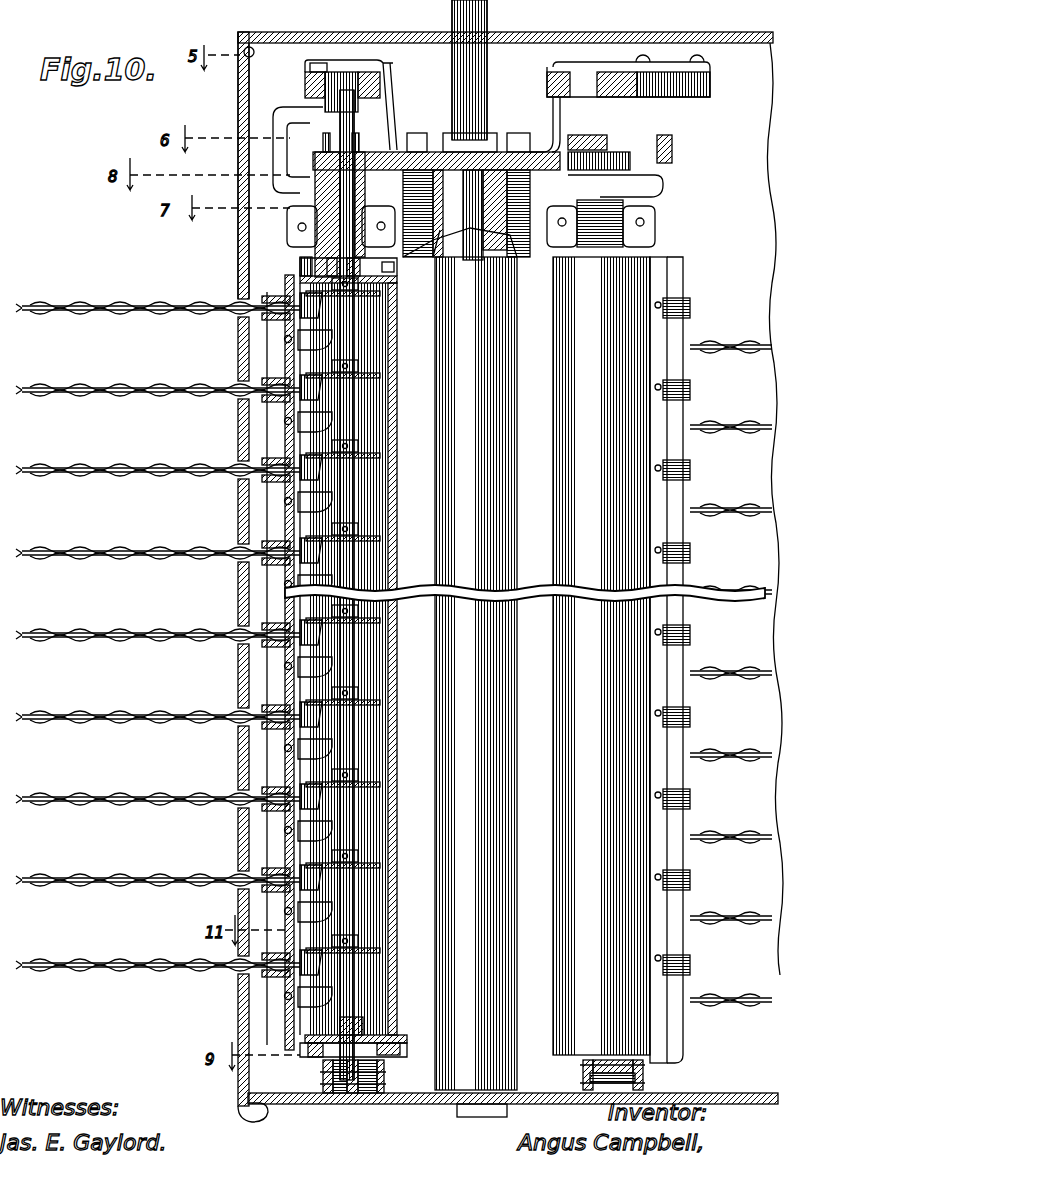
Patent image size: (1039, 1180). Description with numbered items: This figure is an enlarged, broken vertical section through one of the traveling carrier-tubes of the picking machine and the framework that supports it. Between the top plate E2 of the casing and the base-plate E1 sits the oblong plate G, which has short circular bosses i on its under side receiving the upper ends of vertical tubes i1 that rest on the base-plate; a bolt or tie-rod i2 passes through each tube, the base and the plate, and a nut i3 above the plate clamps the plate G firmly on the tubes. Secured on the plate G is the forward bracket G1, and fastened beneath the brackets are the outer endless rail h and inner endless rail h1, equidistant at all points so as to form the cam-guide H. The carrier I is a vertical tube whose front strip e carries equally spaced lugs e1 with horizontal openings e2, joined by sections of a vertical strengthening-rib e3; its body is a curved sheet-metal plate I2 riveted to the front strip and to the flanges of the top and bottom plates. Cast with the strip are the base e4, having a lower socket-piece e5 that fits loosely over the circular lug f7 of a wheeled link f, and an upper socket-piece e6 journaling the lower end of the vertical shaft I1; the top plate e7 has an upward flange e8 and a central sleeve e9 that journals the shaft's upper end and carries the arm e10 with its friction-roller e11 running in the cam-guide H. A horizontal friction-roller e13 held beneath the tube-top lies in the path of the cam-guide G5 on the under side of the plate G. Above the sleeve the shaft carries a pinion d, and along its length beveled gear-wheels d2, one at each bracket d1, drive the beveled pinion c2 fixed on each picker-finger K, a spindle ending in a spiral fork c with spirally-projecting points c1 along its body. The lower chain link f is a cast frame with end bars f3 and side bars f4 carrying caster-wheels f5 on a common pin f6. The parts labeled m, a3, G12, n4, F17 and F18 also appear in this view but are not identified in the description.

The top plate E2 is at (530, 38).
The base-plate E1 is at (440, 1100).
The left frame plate m is at (240, 385).
The picker-finger K is at (128, 306).
The spiral fork c is at (18, 394).
The spirally-projecting points c1 is at (92, 396).
The front strip e is at (286, 438).
The lugs e1 is at (272, 305).
The horizontal openings e2 is at (270, 333).
The vertical strengthening-rib e3 is at (280, 672).
The beveled gear-wheels d2 is at (387, 433).
The bracket d1 is at (276, 508).
The beveled pinion c2 is at (290, 630).
The vertical shaft I1 is at (352, 498).
The vertical drive shaft a3 is at (355, 143).
The curved sheet-metal plate I2 is at (420, 775).
The vertical tubes i1 is at (480, 362).
The carrier I is at (396, 668).
The cam-guide H is at (330, 90).
The friction-rollers e11 is at (318, 66).
The outer endless rail h is at (307, 80).
The inner endless rail h1 is at (548, 78).
The forward bracket G1 is at (388, 88).
The oblong plate G is at (400, 156).
The bracket plate G12 is at (590, 140).
The pinion d is at (318, 165).
The arm e10 is at (283, 125).
The sleeve e9 is at (290, 202).
The lug with pin hole F17 is at (383, 215).
The circular bosses i is at (493, 175).
The nut i3 is at (452, 142).
The bolt or tie-rod i2 is at (475, 212).
The cam-guide G5 is at (520, 262).
The horizontal friction-roller e13 is at (592, 258).
The top plate e7 is at (300, 260).
The circumferential upward-extending flange e8 is at (244, 276).
The frame lug n4 is at (240, 250).
The base e4 is at (395, 1040).
The central socket-piece e6 is at (365, 1020).
The central socket-piece e5 is at (300, 1040).
The circular lug f7 is at (375, 1035).
The common pin f6 is at (325, 1075).
The wheeled link f is at (352, 1093).
The caster-wheels f5 is at (375, 1070).
The side bars f4 is at (332, 1093).
The coupling pin F18 is at (328, 1088).
The end bars f3 is at (645, 1062).